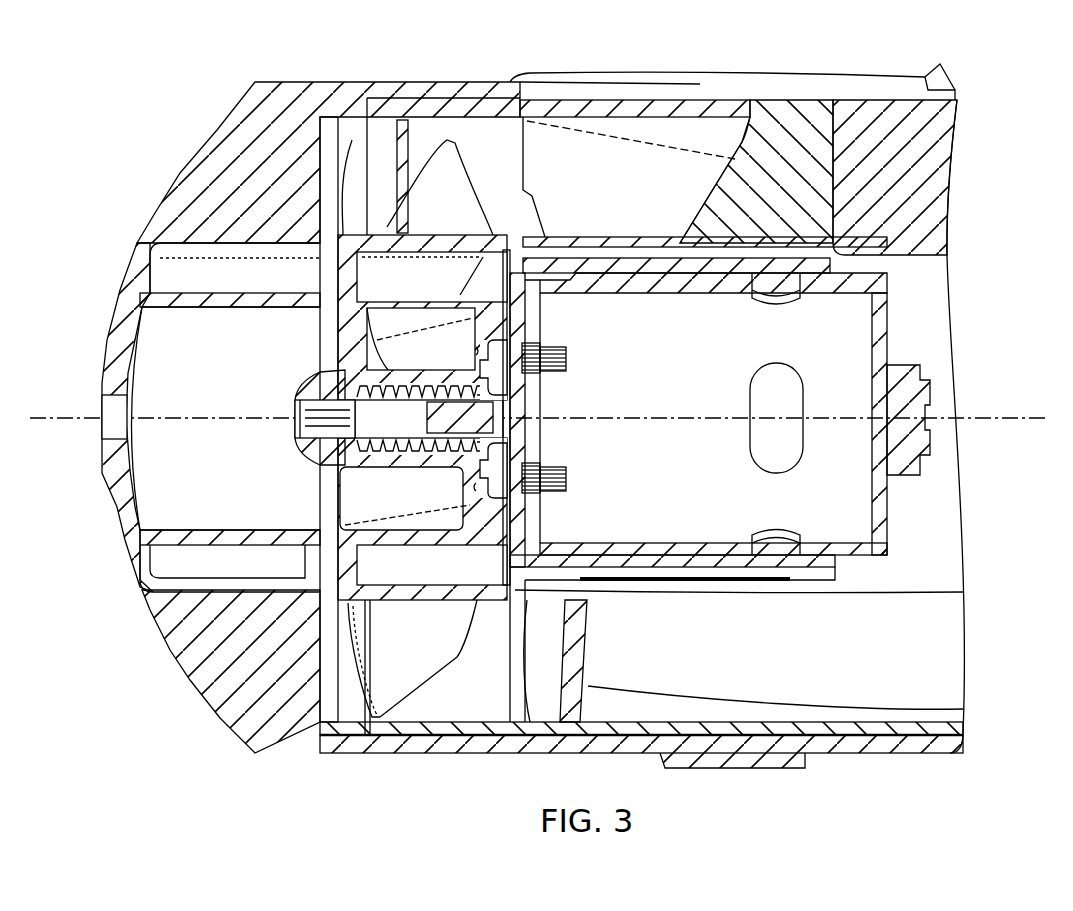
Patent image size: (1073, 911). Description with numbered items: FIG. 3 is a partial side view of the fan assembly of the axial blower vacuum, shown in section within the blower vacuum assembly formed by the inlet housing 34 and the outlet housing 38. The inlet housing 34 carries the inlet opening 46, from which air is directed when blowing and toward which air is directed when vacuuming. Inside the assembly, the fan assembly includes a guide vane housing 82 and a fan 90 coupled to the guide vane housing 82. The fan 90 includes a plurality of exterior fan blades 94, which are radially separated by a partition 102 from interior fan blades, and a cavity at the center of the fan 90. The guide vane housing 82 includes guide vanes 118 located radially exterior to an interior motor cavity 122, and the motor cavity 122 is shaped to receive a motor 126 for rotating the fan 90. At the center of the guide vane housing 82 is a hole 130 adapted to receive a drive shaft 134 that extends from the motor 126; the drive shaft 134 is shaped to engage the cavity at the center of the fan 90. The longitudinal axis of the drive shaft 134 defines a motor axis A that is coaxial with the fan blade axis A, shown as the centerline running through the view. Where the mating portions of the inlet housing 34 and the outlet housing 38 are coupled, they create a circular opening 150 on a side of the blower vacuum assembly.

The inlet housing 34 is at (216, 140).
The outlet housing 38 is at (948, 90).
The inlet opening 46 is at (178, 655).
The guide vane housing 82 is at (713, 110).
The fan 90 is at (400, 722).
The exterior fan blades 94 is at (383, 137).
The partition 102 is at (357, 245).
The guide vanes 118 is at (607, 165).
The motor cavity 122 is at (618, 560).
The motor 126 is at (832, 337).
The hole 130 is at (505, 478).
The drive shaft 134 is at (320, 462).
The circular opening 150 is at (884, 90).
The motor axis A is at (1000, 412).